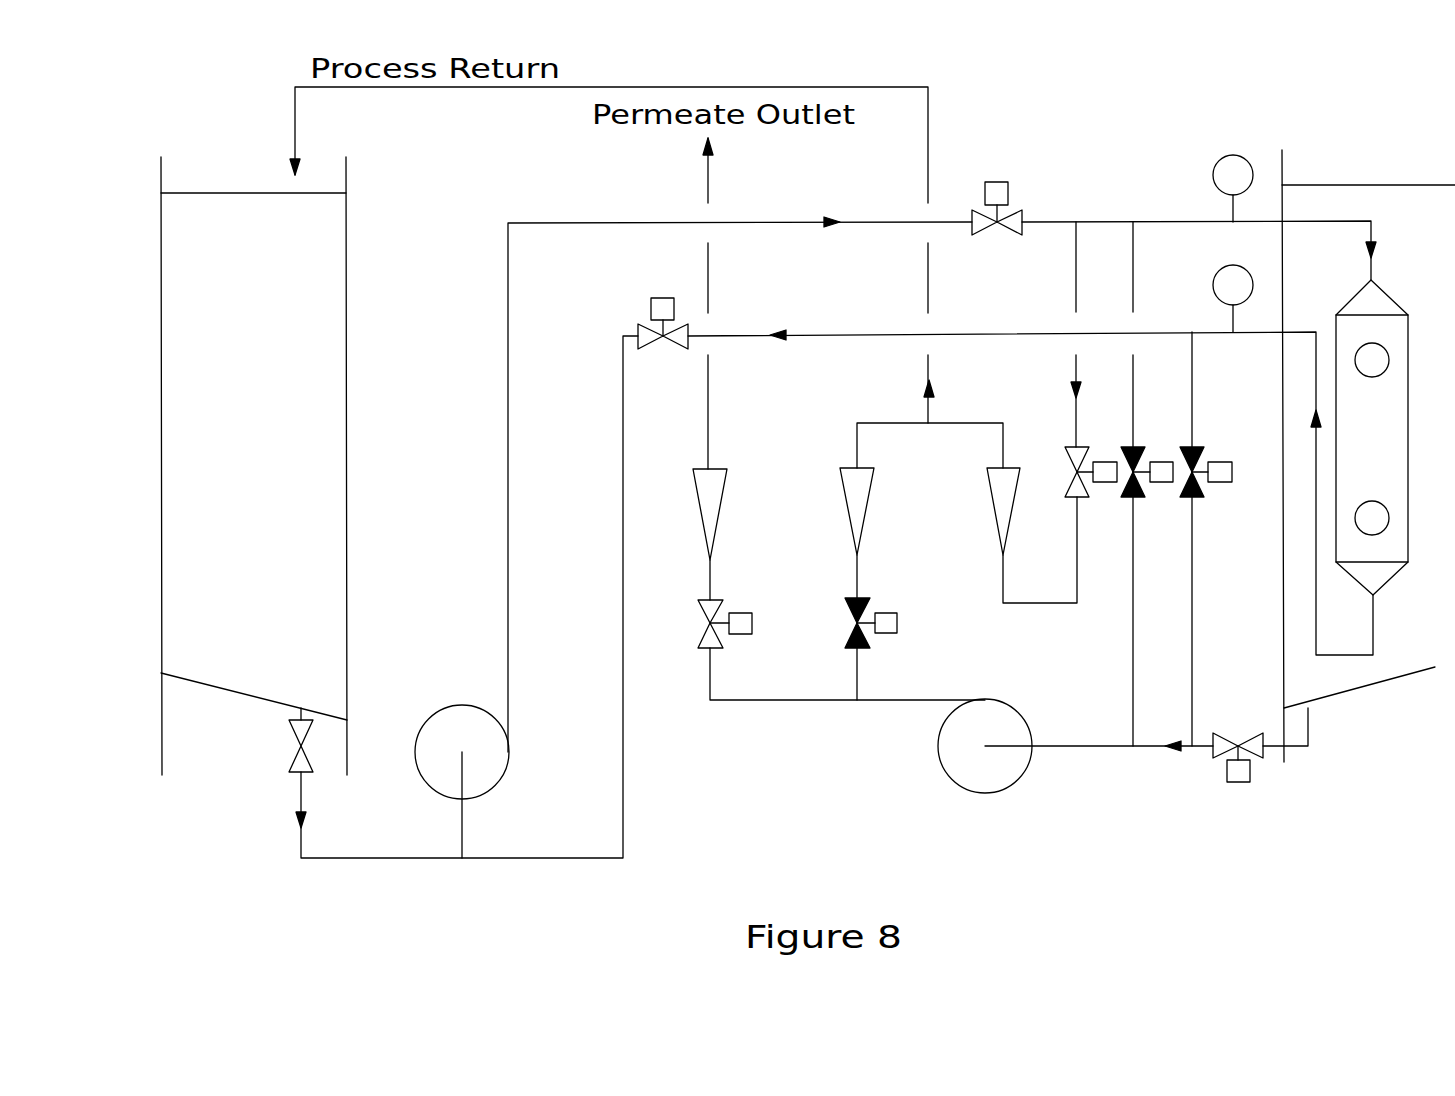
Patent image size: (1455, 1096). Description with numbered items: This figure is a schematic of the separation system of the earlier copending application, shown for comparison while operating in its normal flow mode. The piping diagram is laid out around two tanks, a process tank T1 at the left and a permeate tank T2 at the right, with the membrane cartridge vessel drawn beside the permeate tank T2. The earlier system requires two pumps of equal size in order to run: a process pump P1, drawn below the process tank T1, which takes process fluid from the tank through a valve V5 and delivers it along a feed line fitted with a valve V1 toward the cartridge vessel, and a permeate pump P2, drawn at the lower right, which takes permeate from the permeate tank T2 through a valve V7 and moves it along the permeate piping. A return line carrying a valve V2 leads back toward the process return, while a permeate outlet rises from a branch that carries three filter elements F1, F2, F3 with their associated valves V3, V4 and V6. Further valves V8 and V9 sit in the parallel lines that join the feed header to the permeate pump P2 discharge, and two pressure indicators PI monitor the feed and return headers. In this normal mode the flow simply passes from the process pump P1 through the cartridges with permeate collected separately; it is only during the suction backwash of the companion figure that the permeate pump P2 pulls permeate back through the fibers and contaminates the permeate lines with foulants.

The process tank T1 is at (326, 466).
The permeate tank T2 is at (1368, 500).
The process pump P1 is at (464, 834).
The permeate pump P2 is at (1068, 801).
The valve V1 is at (997, 190).
The valve V2 is at (663, 306).
The valve V3 is at (1093, 456).
The valve V4 is at (702, 624).
The valve V5 is at (275, 740).
The valve V6 is at (850, 623).
The valve V7 is at (1260, 738).
The valve V8 is at (1150, 456).
The valve V9 is at (1211, 539).
The filter F1 is at (1012, 535).
The filter F2 is at (833, 533).
The filter F3 is at (688, 534).
The pressure indicator PI is at (1233, 243).